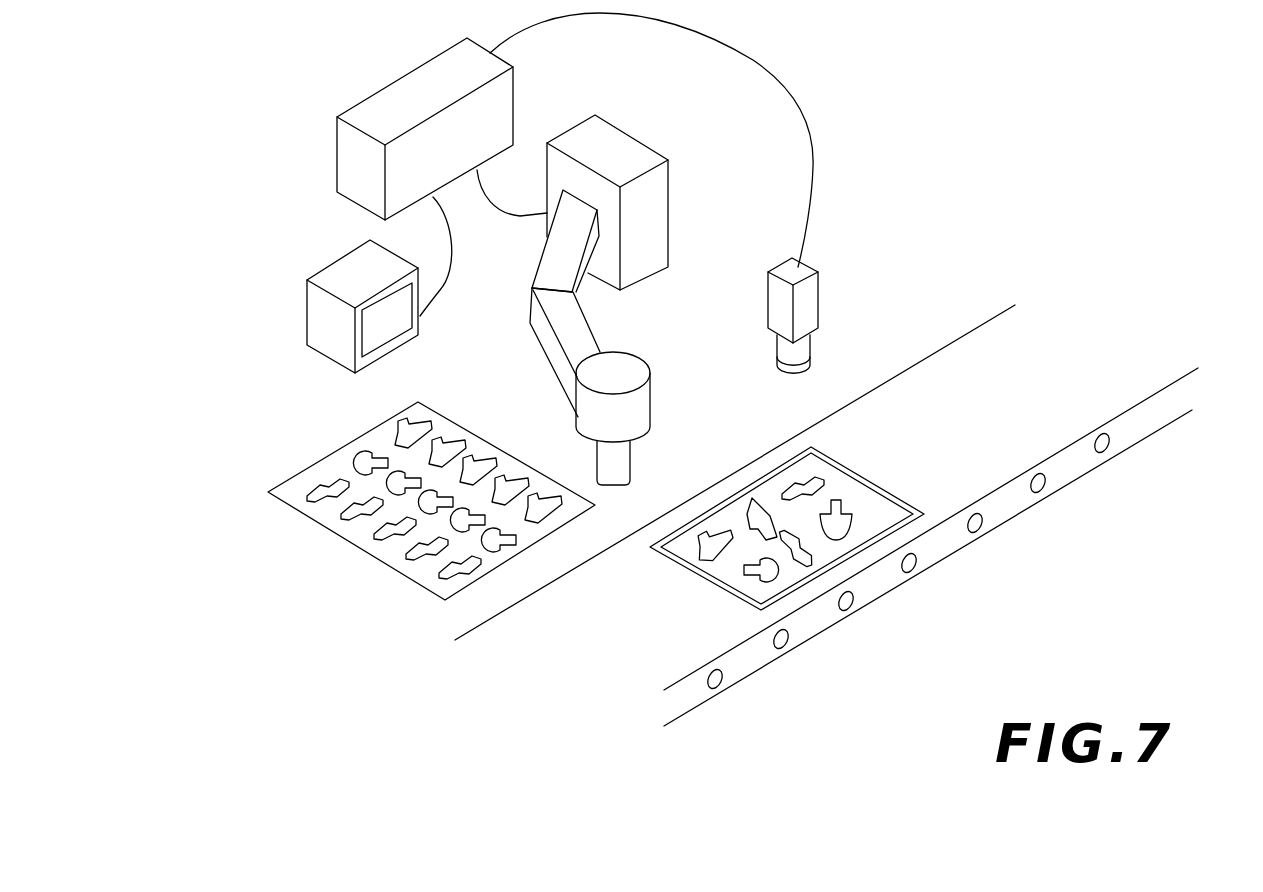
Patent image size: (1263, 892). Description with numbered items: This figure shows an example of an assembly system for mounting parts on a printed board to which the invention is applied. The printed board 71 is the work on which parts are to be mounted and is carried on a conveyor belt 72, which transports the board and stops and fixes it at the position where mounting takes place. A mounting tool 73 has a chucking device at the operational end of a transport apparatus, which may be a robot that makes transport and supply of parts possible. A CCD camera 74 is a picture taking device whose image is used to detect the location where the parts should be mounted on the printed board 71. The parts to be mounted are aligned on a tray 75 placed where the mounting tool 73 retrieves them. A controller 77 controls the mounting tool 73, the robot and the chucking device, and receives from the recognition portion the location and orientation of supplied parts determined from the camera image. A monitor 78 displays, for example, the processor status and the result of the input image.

The printed board 71 is at (866, 523).
The conveyor belt 72 is at (931, 445).
The mounting tool 73 is at (652, 398).
The CCD camera 74 is at (820, 298).
The tray 75 is at (388, 563).
The controller 77 is at (635, 133).
The monitor 78 is at (392, 353).